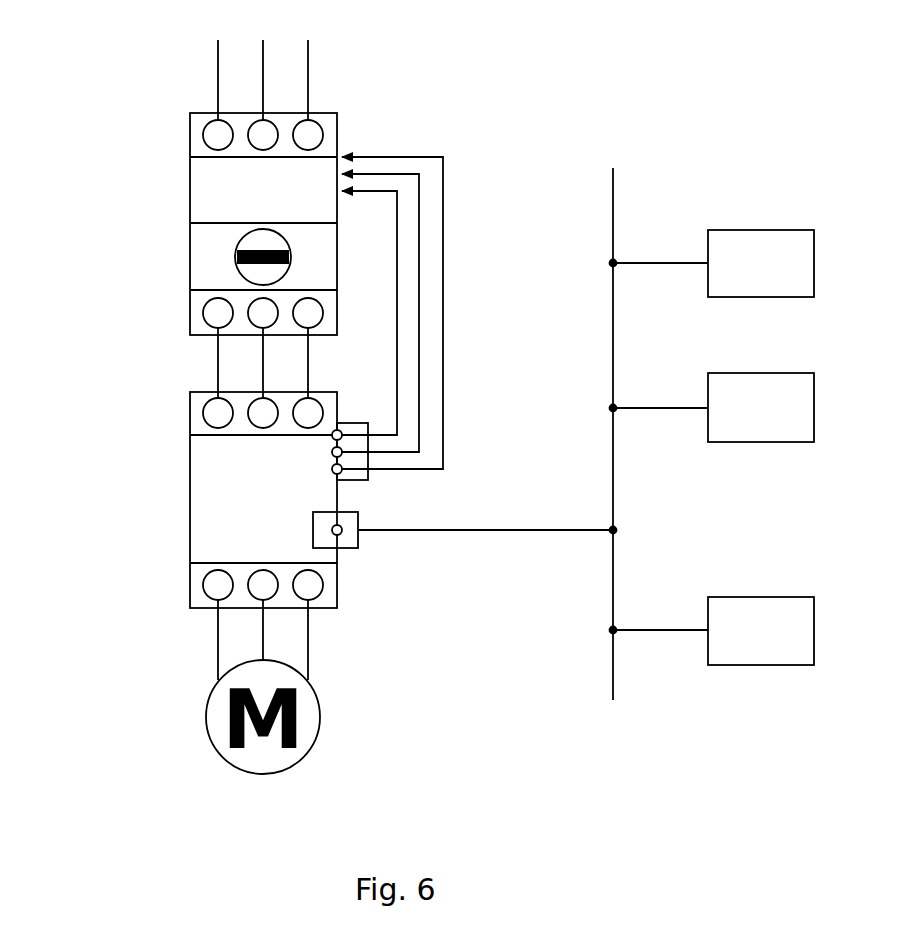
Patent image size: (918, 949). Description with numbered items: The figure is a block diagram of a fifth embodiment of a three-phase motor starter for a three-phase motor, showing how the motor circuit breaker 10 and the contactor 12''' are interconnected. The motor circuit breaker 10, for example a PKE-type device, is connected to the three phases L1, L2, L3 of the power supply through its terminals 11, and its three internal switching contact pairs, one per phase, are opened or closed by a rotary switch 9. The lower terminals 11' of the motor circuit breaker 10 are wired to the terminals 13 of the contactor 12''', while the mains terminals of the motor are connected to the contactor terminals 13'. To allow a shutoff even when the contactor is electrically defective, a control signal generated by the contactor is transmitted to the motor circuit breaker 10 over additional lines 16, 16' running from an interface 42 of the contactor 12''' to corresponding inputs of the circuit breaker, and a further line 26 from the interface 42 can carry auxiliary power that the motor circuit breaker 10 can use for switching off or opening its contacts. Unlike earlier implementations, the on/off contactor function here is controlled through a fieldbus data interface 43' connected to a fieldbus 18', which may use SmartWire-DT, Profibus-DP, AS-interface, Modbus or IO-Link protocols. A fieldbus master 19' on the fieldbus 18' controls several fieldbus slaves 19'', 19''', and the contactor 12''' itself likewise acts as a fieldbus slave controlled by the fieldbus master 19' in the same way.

The phase L1 is at (219, 66).
The phase L2 is at (264, 66).
The phase L3 is at (309, 66).
The motor circuit breaker 10 is at (219, 224).
The terminals 11 is at (226, 143).
The terminals 11' is at (218, 317).
The rotary switch 9 is at (280, 243).
The contactor 12''' is at (196, 505).
The terminals 13 is at (218, 419).
The terminals 13' is at (216, 594).
The interface 42 is at (352, 430).
The fieldbus data interface 43' is at (389, 518).
The additional line 16 is at (431, 313).
The additional line 16' is at (435, 313).
The further line 26 is at (397, 338).
The fieldbus 18' is at (485, 495).
The fieldbus master 19' is at (715, 600).
The fieldbus slave 19'' is at (713, 437).
The fieldbus slave 19''' is at (713, 231).